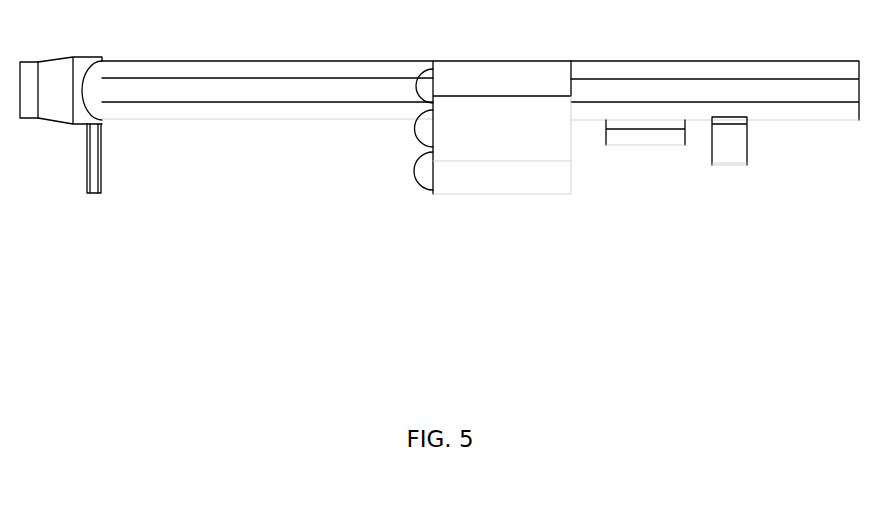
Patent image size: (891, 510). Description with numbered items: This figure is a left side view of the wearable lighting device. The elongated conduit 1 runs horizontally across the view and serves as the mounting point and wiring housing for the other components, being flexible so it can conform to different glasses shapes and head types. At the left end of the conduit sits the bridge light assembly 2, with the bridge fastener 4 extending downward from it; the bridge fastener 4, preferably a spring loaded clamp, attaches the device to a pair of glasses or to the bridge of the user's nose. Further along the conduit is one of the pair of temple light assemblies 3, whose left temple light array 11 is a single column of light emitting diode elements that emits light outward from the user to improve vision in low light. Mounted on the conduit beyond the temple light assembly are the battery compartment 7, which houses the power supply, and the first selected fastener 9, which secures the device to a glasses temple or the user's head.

The elongated conduit 1 is at (270, 70).
The bridge light assembly 2 is at (58, 70).
The pair of temple light assemblies 3 is at (510, 184).
The bridge fastener 4 is at (90, 195).
The battery compartment 7 is at (644, 137).
The first selected fastener 9 is at (727, 154).
The left temple light array 11 is at (422, 179).